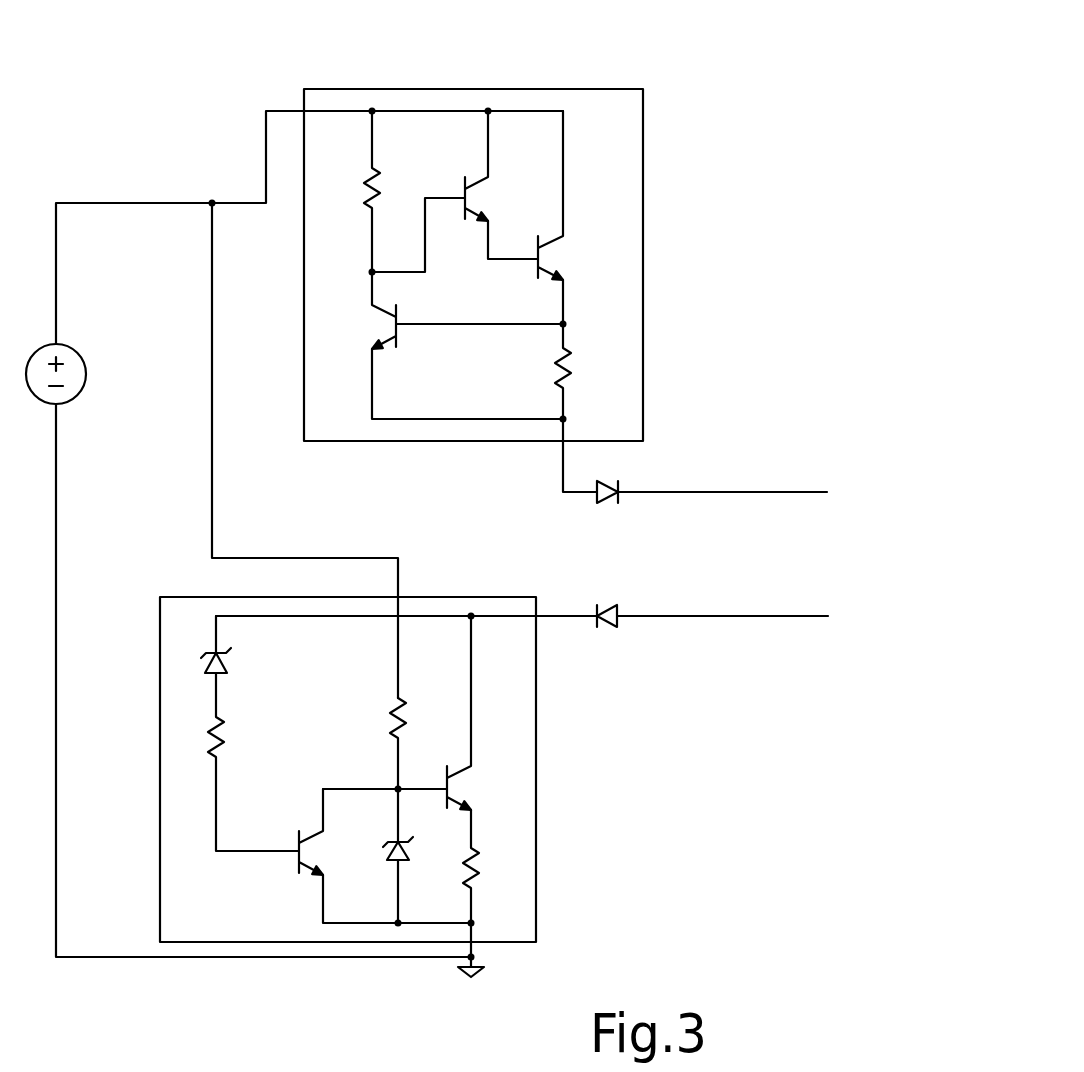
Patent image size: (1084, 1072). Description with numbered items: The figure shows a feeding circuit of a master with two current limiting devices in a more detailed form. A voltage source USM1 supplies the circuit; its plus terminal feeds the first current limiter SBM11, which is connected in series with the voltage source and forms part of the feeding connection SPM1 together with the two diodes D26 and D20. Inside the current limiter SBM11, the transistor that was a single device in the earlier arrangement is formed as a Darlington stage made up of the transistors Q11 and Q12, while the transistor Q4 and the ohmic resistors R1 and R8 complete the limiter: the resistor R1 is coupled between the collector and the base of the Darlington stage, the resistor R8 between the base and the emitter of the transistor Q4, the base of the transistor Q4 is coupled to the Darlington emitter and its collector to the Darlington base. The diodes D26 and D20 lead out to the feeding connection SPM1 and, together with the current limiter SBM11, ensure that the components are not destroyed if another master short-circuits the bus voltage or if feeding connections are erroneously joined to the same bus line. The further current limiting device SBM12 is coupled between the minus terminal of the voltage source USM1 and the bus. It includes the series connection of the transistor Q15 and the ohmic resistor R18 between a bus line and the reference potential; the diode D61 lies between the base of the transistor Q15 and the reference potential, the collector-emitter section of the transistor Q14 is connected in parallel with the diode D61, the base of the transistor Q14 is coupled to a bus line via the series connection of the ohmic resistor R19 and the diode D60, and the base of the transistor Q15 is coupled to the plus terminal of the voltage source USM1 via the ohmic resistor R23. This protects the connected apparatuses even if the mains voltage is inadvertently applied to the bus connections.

The voltage source USM1 is at (89, 374).
The current limiter SBM11 is at (626, 212).
The current limiting device SBM12 is at (521, 710).
The feeding connection SPM1 is at (735, 554).
The ohmic resistor R1 is at (389, 191).
The ohmic resistor R8 is at (579, 371).
The ohmic resistor R19 is at (253, 762).
The ohmic resistor R23 is at (420, 743).
The ohmic resistor R18 is at (493, 866).
The transistor Q11 is at (501, 185).
The transistor Q12 is at (572, 217).
The transistor Q4 is at (467, 345).
The transistor Q14 is at (385, 856).
The transistor Q15 is at (478, 713).
The diode D26 is at (595, 461).
The diode D20 is at (549, 602).
The diode D60 is at (238, 645).
The diode D61 is at (414, 856).